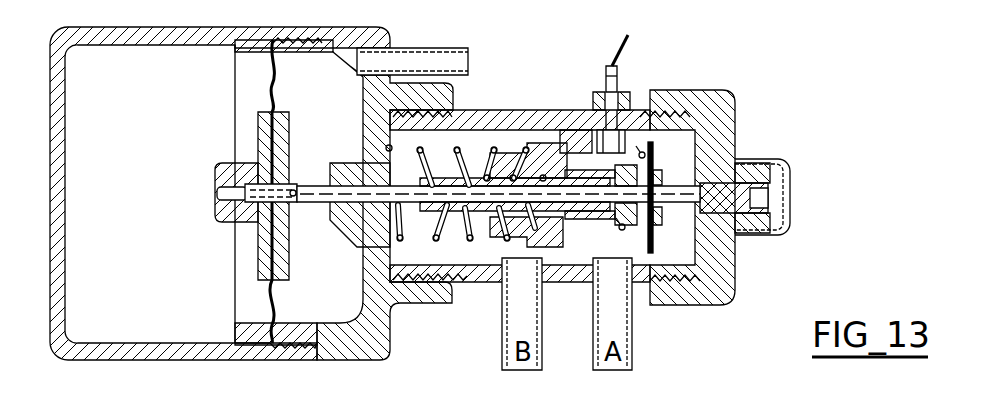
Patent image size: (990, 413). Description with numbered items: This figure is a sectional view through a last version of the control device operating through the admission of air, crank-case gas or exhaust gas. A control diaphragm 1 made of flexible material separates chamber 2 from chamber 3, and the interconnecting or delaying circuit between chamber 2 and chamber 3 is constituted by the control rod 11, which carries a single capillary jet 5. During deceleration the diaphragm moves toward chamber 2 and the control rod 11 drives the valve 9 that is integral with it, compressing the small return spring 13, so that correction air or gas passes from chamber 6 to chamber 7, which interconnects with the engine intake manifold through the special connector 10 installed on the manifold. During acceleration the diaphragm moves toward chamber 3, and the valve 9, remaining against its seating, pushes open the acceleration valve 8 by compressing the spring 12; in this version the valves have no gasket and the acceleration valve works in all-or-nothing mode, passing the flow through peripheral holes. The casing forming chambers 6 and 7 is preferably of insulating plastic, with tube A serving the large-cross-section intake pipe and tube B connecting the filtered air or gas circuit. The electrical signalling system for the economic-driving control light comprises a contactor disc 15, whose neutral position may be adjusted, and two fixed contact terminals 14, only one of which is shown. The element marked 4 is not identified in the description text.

The control diaphragm 1 is at (272, 95).
The chamber 2 is at (467, 199).
The chamber 3 is at (220, 193).
The piston plate 4 is at (300, 187).
The capillary jet 5 is at (215, 191).
The chamber 6 is at (515, 188).
The chamber 7 is at (720, 197).
The acceleration valve 8 is at (543, 237).
The valve 9 is at (629, 213).
The special connector 10 is at (410, 63).
The control rod 11 is at (318, 202).
The spring 12 is at (437, 248).
The small return spring 13 is at (460, 222).
The fixed contact terminal 14 is at (628, 92).
The contactor disc 15 is at (624, 143).